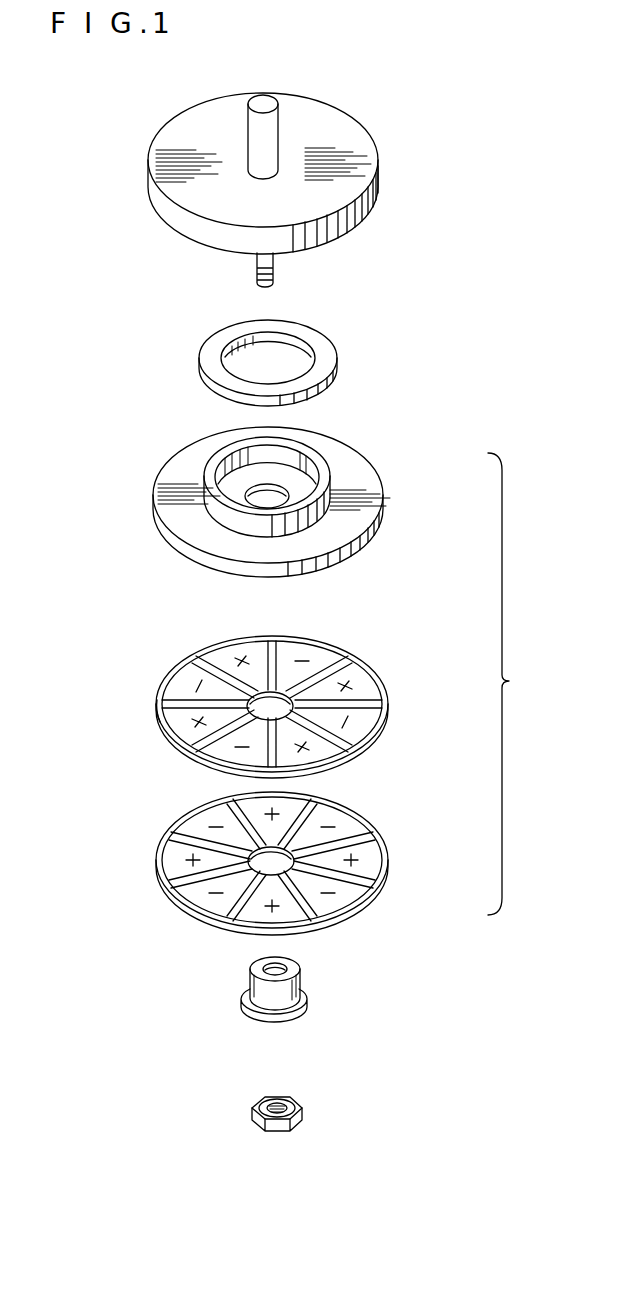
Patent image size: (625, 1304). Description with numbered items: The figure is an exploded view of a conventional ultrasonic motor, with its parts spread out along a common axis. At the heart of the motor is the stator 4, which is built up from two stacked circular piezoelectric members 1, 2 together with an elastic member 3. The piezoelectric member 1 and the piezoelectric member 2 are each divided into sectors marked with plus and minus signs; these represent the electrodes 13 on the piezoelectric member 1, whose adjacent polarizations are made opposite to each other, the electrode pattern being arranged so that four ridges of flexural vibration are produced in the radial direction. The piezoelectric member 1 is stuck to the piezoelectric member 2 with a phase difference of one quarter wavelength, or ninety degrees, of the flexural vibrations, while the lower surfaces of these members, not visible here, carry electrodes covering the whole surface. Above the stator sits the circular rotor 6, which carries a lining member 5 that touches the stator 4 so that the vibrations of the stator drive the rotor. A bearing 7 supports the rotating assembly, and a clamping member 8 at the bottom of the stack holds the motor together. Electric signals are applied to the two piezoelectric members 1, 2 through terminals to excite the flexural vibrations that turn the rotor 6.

The piezoelectric member 1 is at (385, 730).
The piezoelectric member 2 is at (386, 885).
The elastic member 3 is at (360, 500).
The stator 4 is at (511, 684).
The lining member 5 is at (340, 363).
The rotor 6 is at (357, 152).
The bearing 7 is at (300, 985).
The clamping member 8 is at (298, 1113).
The electrode 13 is at (158, 722).